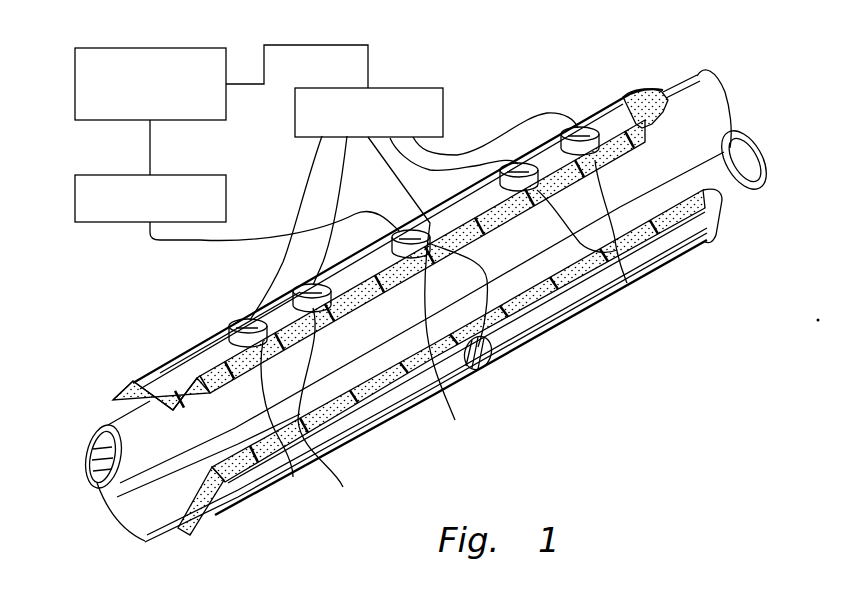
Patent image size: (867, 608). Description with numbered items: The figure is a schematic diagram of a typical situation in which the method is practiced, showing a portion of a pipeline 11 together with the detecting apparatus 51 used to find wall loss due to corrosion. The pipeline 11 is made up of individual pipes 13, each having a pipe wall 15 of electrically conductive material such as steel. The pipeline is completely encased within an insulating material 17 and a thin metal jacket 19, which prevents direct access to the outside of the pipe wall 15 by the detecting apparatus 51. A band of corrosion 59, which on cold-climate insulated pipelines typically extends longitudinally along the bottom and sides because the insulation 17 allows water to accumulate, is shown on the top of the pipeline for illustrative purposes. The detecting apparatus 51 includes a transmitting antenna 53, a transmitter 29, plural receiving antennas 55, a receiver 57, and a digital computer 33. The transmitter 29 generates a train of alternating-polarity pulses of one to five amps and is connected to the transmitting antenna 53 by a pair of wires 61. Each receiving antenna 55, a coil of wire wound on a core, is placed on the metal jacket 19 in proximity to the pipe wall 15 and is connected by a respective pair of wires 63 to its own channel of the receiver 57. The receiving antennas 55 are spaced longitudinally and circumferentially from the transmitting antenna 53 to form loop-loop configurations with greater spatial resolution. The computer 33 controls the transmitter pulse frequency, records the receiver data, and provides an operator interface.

The pipeline 11 is at (523, 68).
The pipe 13 is at (694, 82).
The pipe wall 15 is at (122, 432).
The insulating material 17 is at (140, 385).
The metal jacket 19 is at (184, 368).
The transmitter 29 is at (148, 234).
The digital computer 33 is at (148, 48).
The detecting apparatus 51 is at (268, 40).
The transmitting antenna means 53 is at (457, 413).
The receiving antenna 55 is at (350, 445).
The receiver 57 is at (445, 110).
The corrosion 59 is at (345, 490).
The pair of wires 61 is at (232, 244).
The pair of wires 63 is at (338, 188).